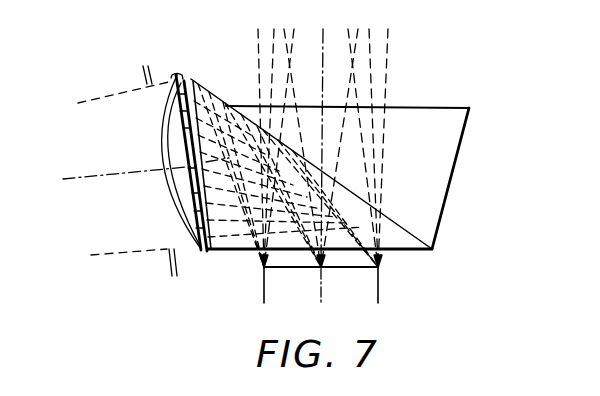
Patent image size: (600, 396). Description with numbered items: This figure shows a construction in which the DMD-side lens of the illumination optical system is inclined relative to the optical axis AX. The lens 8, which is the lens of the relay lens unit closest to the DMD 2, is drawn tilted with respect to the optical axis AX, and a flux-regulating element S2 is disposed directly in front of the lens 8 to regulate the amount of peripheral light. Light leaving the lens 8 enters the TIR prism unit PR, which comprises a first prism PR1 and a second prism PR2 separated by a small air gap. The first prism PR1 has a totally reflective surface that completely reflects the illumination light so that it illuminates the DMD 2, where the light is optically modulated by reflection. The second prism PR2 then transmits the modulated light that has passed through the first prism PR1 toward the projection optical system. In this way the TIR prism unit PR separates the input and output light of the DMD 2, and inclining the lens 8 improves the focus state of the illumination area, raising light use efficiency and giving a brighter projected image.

The lens 8 is at (164, 146).
The DMD 2 is at (338, 268).
The optical axis AX is at (80, 178).
The flux-regulating element S2 is at (167, 265).
The TIR prism unit PR is at (362, 188).
The first prism PR1 is at (398, 243).
The second prism PR2 is at (452, 153).